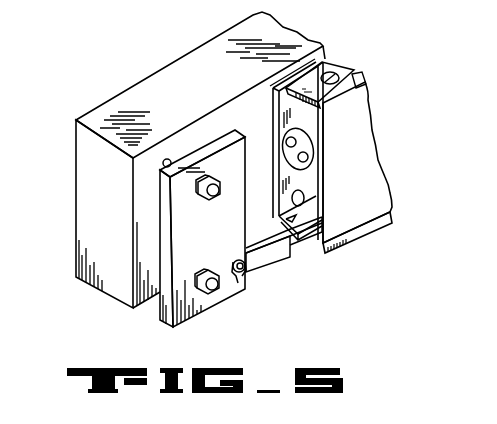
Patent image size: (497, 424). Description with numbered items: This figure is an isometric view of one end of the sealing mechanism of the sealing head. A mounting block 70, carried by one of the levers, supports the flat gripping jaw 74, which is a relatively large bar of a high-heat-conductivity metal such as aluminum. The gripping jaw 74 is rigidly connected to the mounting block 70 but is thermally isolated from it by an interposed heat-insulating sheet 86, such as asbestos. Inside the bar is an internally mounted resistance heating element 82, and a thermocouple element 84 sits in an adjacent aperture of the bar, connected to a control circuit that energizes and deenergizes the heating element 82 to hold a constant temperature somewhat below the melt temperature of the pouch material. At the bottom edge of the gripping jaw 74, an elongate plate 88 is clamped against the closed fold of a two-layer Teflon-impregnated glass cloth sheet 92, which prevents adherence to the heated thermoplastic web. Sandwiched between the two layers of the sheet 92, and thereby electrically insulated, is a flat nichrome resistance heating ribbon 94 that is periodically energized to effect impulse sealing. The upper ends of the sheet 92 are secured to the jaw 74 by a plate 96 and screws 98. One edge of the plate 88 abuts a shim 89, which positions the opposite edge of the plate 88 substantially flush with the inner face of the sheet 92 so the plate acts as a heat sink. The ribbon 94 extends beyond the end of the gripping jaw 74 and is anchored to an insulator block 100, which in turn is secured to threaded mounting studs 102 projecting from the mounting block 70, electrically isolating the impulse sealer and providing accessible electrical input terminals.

The mounting block 70 is at (80, 208).
The gripping jaw 74 is at (286, 117).
The resistance heating element 82 is at (304, 146).
The thermocouple element 84 is at (303, 199).
The heat-insulating sheet 86 is at (274, 89).
The elongate plate 88 is at (372, 223).
The shim 89 is at (277, 219).
The Teflon-impregnated glass cloth sheet 92 is at (388, 175).
The resistance heating ribbon 94 is at (297, 250).
The plate 96 is at (359, 85).
The screws 98 is at (332, 78).
The insulator block 100 is at (167, 312).
The threaded mounting studs 102 is at (163, 163).